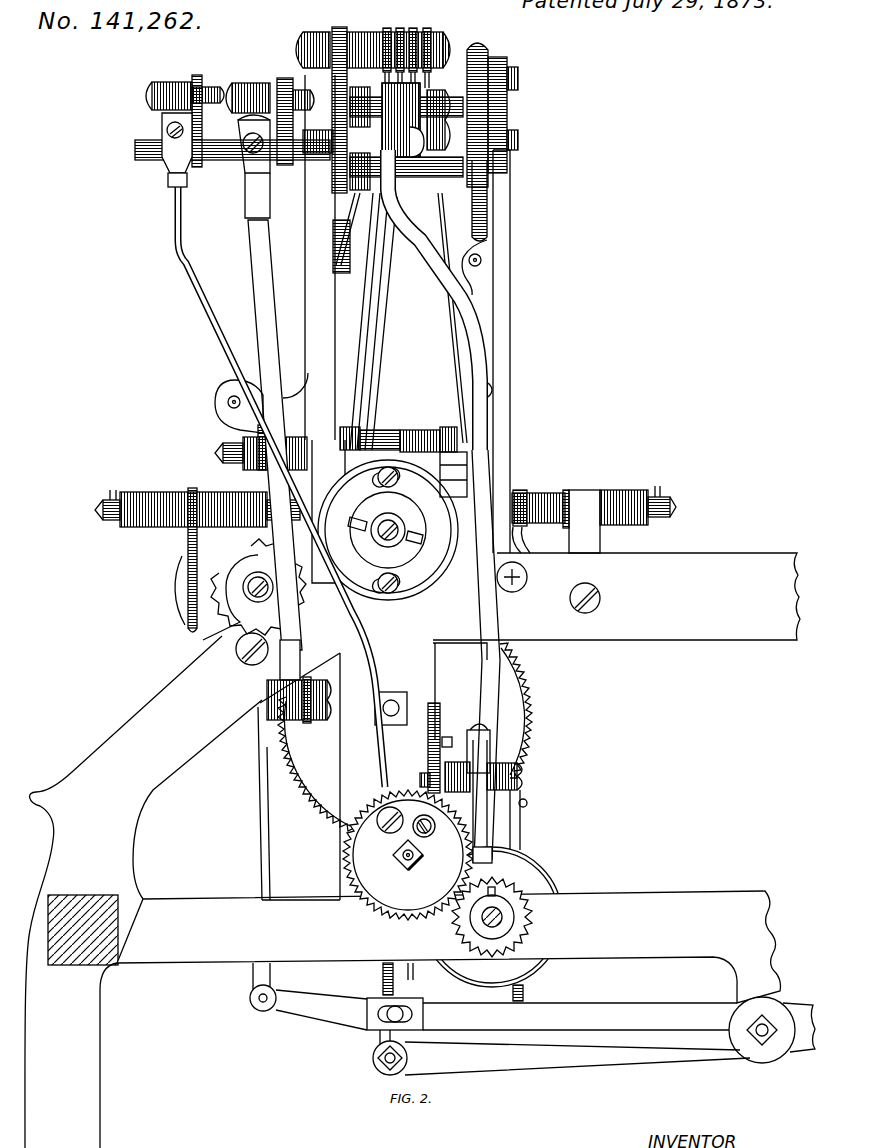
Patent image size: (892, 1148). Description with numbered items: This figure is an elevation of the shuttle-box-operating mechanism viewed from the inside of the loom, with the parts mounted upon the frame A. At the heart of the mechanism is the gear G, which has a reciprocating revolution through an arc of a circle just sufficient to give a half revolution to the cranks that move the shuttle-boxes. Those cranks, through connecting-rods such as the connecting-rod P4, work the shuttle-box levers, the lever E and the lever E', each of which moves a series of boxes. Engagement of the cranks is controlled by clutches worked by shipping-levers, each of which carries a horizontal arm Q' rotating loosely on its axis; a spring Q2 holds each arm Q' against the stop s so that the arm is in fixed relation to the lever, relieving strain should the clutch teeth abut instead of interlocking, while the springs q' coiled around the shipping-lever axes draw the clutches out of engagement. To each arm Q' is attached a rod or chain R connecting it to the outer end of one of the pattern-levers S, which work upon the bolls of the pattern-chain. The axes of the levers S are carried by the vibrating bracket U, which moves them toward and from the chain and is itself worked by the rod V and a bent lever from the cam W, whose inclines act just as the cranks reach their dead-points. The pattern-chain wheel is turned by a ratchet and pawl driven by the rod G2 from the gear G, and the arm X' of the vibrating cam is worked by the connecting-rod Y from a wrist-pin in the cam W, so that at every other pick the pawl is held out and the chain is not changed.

The frame A is at (420, 611).
The arm X' is at (234, 117).
The vibrating bracket U is at (338, 99).
The pattern-levers S is at (407, 125).
The connecting-rod Y is at (281, 487).
The rod G2 is at (284, 419).
The rod or chain R is at (412, 300).
The springs q' is at (445, 472).
The horizontal arms Q' is at (197, 502).
The springs Q2 is at (387, 553).
The stop s is at (388, 508).
The rod V is at (451, 656).
The gear G is at (405, 737).
The connecting-rod P4 is at (301, 869).
The cam W is at (408, 855).
The lever E' is at (522, 1024).
The lever E is at (561, 1052).